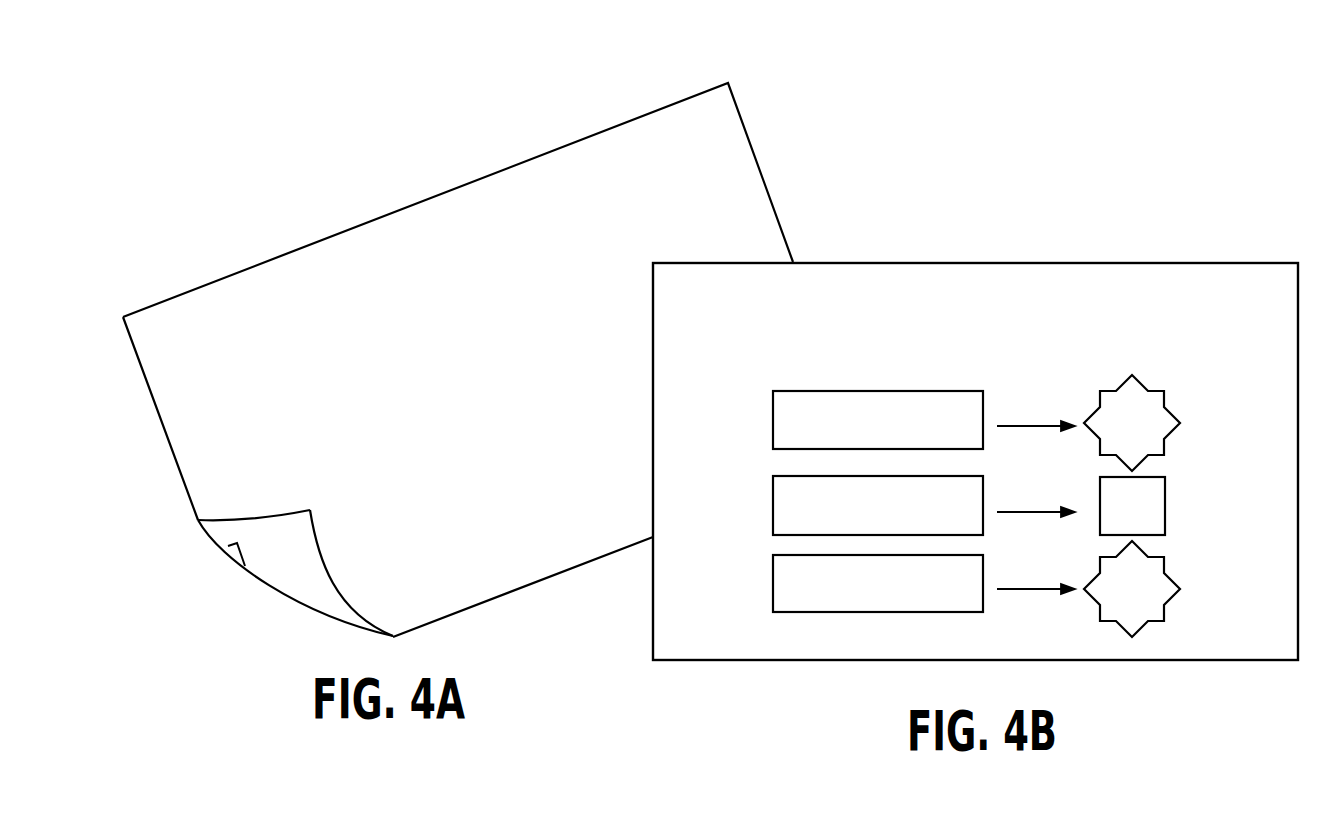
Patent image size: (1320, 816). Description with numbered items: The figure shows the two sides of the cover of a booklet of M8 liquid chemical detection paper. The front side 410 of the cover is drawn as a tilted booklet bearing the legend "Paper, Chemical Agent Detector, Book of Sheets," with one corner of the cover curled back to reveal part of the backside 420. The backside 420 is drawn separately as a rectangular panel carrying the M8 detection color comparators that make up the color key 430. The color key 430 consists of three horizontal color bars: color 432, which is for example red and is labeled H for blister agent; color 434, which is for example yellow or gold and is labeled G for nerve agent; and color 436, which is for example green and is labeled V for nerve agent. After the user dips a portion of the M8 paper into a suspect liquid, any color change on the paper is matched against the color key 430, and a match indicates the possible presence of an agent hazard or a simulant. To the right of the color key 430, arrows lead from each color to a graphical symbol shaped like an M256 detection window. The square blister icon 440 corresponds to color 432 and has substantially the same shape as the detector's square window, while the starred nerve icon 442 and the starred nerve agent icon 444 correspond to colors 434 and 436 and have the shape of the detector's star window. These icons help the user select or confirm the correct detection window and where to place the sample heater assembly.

In FIG. 4A, the front side of cover 410 is at (722, 140).
In FIG. 4A, the backside of cover 420 is at (308, 597).
In FIG. 4B, the backside of cover 420 is at (1227, 282).
In FIG. 4B, the color key 430 is at (916, 414).
In FIG. 4B, the color comparator 432 is at (986, 489).
In FIG. 4B, the color comparator 434 is at (986, 401).
In FIG. 4B, the color comparator 436 is at (986, 570).
In FIG. 4B, the square blister icon 440 is at (1167, 513).
In FIG. 4B, the starred nerve icon 442 is at (1173, 412).
In FIG. 4B, the starred nerve agent icon 444 is at (1168, 575).